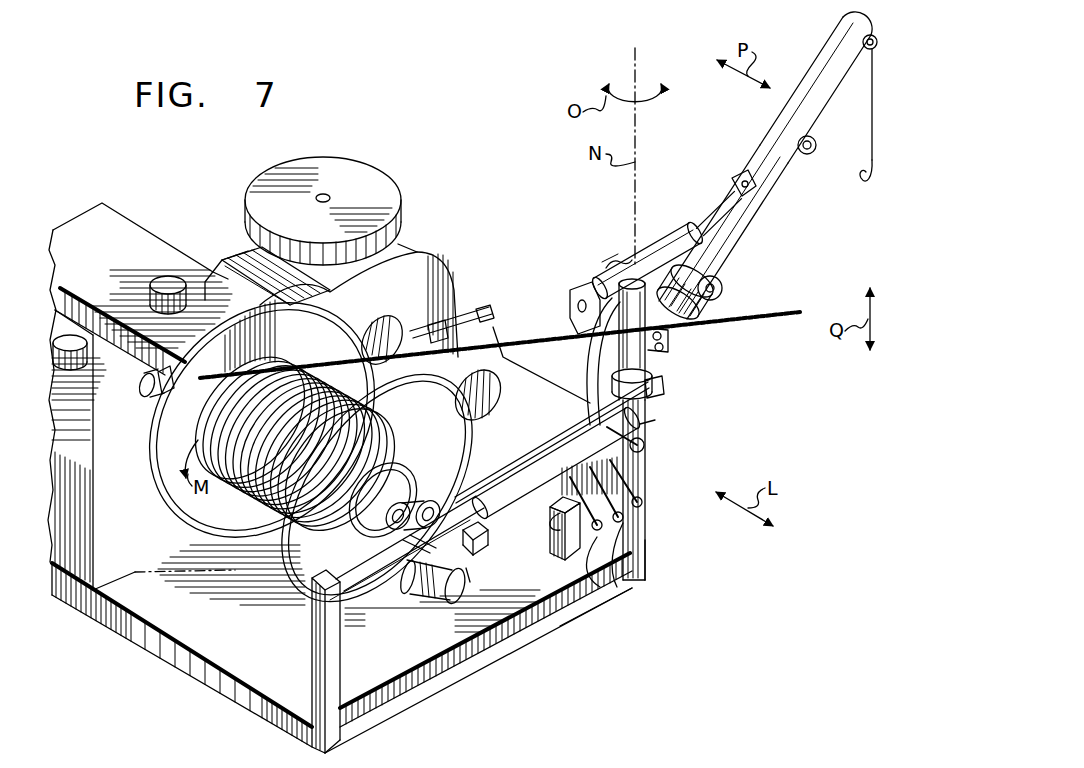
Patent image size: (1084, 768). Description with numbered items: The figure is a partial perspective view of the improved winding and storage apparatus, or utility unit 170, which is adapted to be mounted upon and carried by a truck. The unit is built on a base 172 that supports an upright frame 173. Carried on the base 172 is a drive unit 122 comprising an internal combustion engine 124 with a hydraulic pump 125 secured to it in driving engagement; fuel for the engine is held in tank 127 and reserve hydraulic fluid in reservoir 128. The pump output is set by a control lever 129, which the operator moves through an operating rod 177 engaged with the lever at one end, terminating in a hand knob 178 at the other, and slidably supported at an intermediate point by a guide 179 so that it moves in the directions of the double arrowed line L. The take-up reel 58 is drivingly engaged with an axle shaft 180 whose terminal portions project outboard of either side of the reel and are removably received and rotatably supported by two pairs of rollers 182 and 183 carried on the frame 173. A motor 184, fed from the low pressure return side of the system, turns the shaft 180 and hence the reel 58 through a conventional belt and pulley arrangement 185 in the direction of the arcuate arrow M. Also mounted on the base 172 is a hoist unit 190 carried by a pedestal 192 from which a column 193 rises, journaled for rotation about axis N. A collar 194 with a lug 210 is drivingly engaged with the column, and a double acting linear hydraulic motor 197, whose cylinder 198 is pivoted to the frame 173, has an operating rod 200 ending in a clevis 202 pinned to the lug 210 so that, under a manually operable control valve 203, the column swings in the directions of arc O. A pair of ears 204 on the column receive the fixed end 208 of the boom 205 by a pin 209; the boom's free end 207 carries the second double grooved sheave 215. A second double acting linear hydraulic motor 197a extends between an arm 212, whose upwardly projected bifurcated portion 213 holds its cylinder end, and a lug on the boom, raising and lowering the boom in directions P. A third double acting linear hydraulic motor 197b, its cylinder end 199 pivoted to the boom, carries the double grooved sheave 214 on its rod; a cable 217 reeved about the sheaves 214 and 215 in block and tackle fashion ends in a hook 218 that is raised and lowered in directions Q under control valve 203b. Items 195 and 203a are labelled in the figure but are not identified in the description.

The take-up reel 58 is at (158, 484).
The drive unit 122 is at (398, 178).
The internal combustion engine 124 is at (420, 252).
The hydraulic pump 125 is at (412, 316).
The tank 127 is at (122, 224).
The reservoir 128 is at (118, 570).
The control lever 129 is at (484, 308).
The utility unit 170 is at (514, 645).
The base 172 is at (240, 697).
The upright frame 173 is at (312, 658).
The operating rod 177 is at (490, 330).
The hand knob 178 is at (650, 463).
The guide 179 is at (650, 486).
The axle shaft 180 is at (150, 378).
The rollers 182 is at (448, 502).
The rollers 183 is at (142, 398).
The motor 184 is at (403, 596).
The belt and pulley arrangement 185 is at (365, 518).
The hoist unit 190 is at (640, 238).
The pedestal 192 is at (646, 514).
The column 193 is at (650, 378).
The collar 194 is at (654, 390).
The clamp 195 is at (652, 404).
The double acting linear hydraulic motor 197 is at (512, 401).
The second double acting linear hydraulic motor 197a is at (630, 248).
The third double acting linear hydraulic motor 197b is at (760, 250).
The cylinder 198 is at (612, 256).
The end 199 is at (586, 276).
The operating rod 200 is at (733, 197).
The clevis 202 is at (730, 183).
The manually operable control valve 203 is at (580, 604).
The track rail 203a is at (626, 588).
The control valve 203b is at (647, 552).
The ears 204 is at (665, 368).
The boom 205 is at (773, 128).
The free end 207 is at (825, 47).
The fixed end 208 is at (668, 338).
The pin 209 is at (664, 350).
The lug 210 is at (750, 170).
The arm 212 is at (570, 318).
The bifurcated portion 213 is at (572, 295).
The double grooved sheave 214 is at (816, 146).
The second double grooved sheave 215 is at (876, 30).
The cable 217 is at (869, 110).
The hook 218 is at (850, 188).